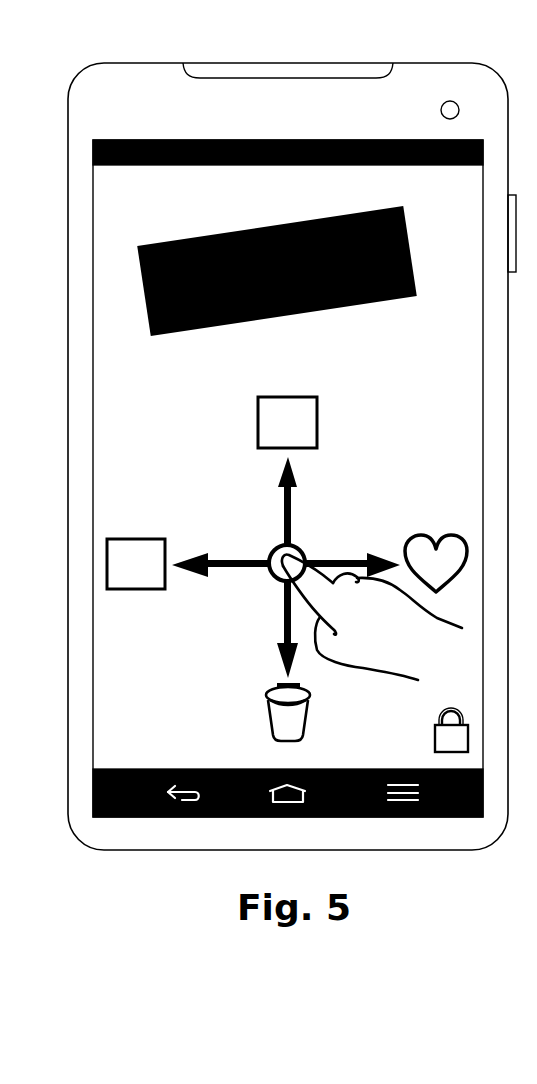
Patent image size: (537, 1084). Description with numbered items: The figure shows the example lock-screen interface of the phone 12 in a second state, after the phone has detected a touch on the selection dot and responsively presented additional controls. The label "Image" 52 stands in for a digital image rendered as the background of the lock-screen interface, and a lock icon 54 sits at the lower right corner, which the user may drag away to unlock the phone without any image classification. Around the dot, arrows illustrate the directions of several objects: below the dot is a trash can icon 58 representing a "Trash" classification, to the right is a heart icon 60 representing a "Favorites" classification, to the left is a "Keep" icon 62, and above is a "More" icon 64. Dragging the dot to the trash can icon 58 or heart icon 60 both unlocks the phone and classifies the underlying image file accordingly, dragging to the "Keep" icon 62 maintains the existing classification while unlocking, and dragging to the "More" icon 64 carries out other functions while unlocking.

The phone 12 is at (68, 335).
The image label 52 is at (198, 236).
The lock icon 54 is at (434, 740).
The trash can icon 58 is at (265, 712).
The heart icon 60 is at (420, 536).
The "Keep" icon 62 is at (143, 538).
The "More" icon 64 is at (280, 396).